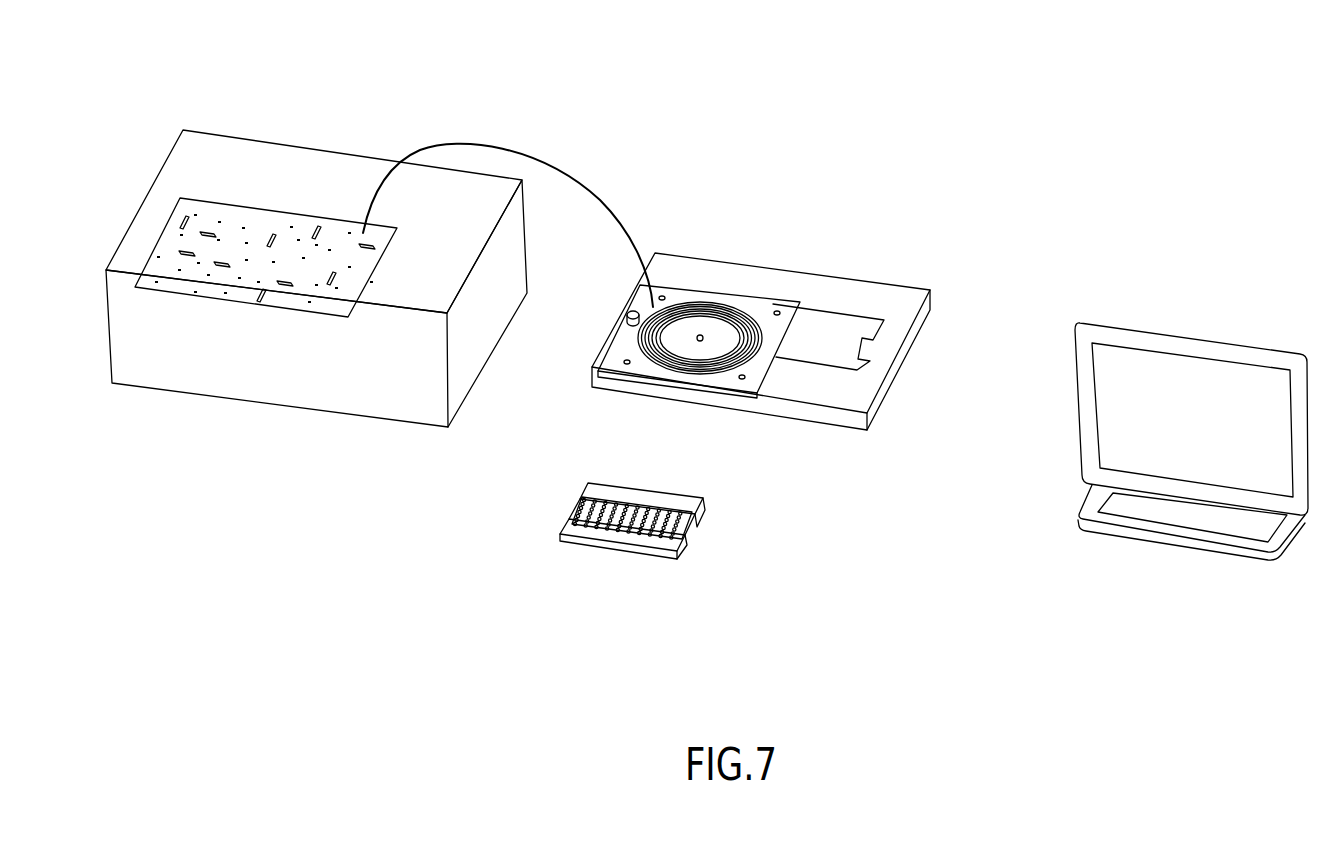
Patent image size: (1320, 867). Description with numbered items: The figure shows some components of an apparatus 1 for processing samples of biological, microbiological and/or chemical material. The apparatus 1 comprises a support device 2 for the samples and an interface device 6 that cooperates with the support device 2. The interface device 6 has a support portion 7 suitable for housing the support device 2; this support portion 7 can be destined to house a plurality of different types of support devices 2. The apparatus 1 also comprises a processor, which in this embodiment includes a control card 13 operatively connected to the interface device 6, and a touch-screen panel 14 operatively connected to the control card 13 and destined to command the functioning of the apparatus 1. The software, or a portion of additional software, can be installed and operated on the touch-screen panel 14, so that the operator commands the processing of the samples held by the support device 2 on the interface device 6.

The apparatus 1 is at (460, 109).
The support device 2 is at (613, 572).
The interface device 6 is at (793, 263).
The support portion 7 is at (844, 322).
The control card 13 is at (220, 187).
The touch-screen panel 14 is at (1243, 333).